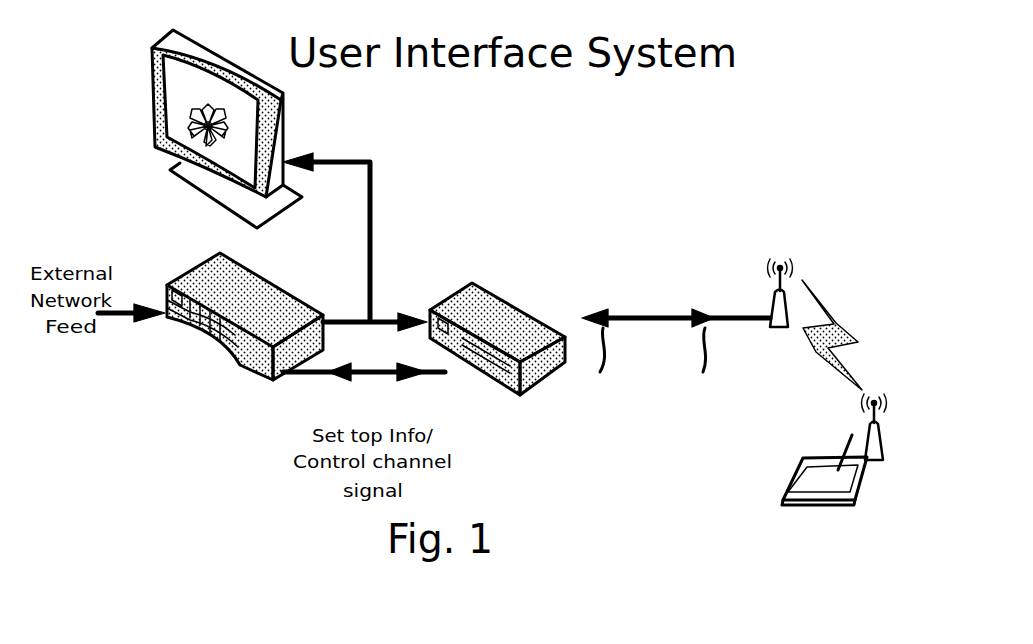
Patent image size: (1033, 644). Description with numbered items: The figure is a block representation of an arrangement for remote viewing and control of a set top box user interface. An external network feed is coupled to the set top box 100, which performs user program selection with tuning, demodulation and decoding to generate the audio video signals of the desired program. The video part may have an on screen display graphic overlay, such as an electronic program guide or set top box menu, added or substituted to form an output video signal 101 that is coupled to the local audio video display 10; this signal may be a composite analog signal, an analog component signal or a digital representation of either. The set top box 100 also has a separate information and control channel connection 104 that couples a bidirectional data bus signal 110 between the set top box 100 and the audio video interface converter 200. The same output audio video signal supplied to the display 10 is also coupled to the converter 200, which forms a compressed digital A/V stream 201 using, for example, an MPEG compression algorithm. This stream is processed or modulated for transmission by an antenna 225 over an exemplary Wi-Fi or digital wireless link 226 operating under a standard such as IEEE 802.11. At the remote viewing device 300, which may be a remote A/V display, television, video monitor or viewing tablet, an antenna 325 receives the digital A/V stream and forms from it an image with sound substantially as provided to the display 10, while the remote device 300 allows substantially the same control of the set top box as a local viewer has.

The audio video display 10 is at (168, 152).
The set top box 100 is at (180, 348).
The output video signal 101 is at (368, 228).
The information and control channel connection 104 is at (283, 380).
The bidirectional data bus signal 110 is at (367, 380).
The audio video interface converter 200 is at (497, 290).
The digital A/V stream 201 is at (643, 317).
The antenna 225 is at (760, 293).
The digital wireless link 226 is at (822, 335).
The remote viewing device 300 is at (783, 500).
The antenna 325 is at (857, 427).